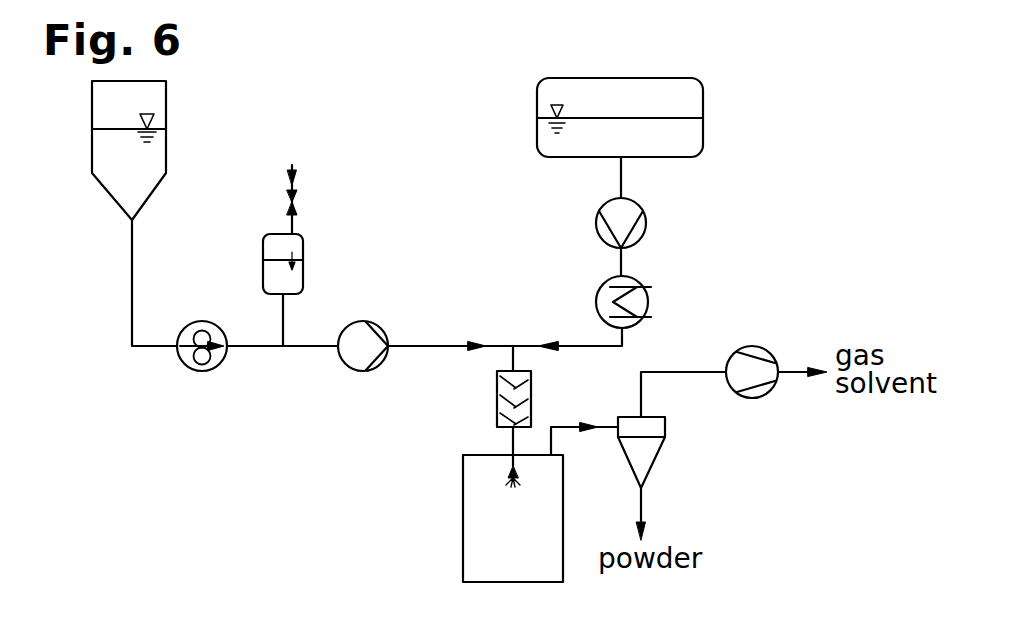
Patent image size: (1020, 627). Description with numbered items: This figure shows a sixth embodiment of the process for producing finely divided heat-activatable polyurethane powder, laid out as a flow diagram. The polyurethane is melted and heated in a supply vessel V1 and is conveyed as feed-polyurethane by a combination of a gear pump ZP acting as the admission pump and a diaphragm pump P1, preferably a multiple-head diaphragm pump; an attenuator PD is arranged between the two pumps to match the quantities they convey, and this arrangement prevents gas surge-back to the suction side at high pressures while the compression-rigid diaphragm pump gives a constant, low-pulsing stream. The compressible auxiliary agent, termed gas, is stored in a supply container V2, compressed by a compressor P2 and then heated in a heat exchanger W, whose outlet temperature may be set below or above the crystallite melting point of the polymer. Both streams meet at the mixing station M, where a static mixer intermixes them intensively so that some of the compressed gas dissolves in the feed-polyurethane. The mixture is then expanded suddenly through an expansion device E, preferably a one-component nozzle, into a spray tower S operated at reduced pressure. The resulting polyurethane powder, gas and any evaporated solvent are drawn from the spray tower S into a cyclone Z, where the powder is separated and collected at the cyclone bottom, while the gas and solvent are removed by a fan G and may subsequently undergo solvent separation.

The supply vessel V1 is at (110, 150).
The gear pump ZP is at (202, 366).
The attenuator PD is at (309, 255).
The diaphragm pump P1 is at (363, 366).
The supply container V2 is at (643, 117).
The compressor P2 is at (600, 223).
The heat exchanger W is at (609, 302).
The mixing station M is at (500, 406).
The expansion device E is at (515, 492).
The spray tower S is at (500, 518).
The cyclone Z is at (672, 456).
The fan G is at (776, 356).